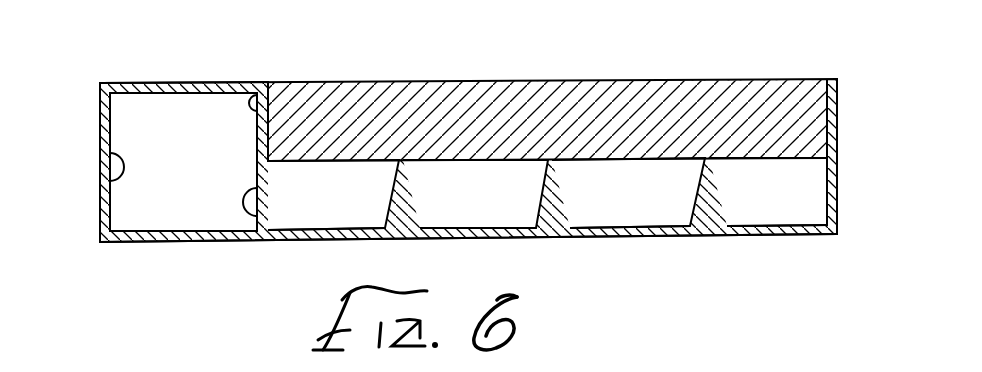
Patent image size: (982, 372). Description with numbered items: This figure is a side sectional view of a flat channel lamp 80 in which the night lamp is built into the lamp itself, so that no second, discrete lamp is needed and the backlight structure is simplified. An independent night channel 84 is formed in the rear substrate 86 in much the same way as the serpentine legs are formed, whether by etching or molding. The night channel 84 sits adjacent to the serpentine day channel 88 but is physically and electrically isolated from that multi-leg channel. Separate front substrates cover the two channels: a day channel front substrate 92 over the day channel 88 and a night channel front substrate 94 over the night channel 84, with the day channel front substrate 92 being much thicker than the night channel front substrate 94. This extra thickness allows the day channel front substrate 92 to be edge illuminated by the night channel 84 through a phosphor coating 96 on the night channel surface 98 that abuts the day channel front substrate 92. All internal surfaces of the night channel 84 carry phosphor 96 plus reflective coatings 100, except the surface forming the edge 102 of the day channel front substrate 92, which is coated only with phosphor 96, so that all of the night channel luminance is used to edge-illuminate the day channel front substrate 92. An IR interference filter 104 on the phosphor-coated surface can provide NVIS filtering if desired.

The flat channel lamp 80 is at (844, 98).
The night channel 84 is at (172, 115).
The rear substrate 86 is at (747, 237).
The day channel 88 is at (645, 200).
The day channel front substrate 92 is at (738, 83).
The night channel front substrate 94 is at (148, 86).
The phosphor coating 96 is at (102, 196).
The night channel surface 98 is at (250, 193).
The reflective coatings 100 is at (252, 209).
The edge of the day channel front substrate 102 is at (249, 128).
The IR interference filter 104 is at (265, 93).